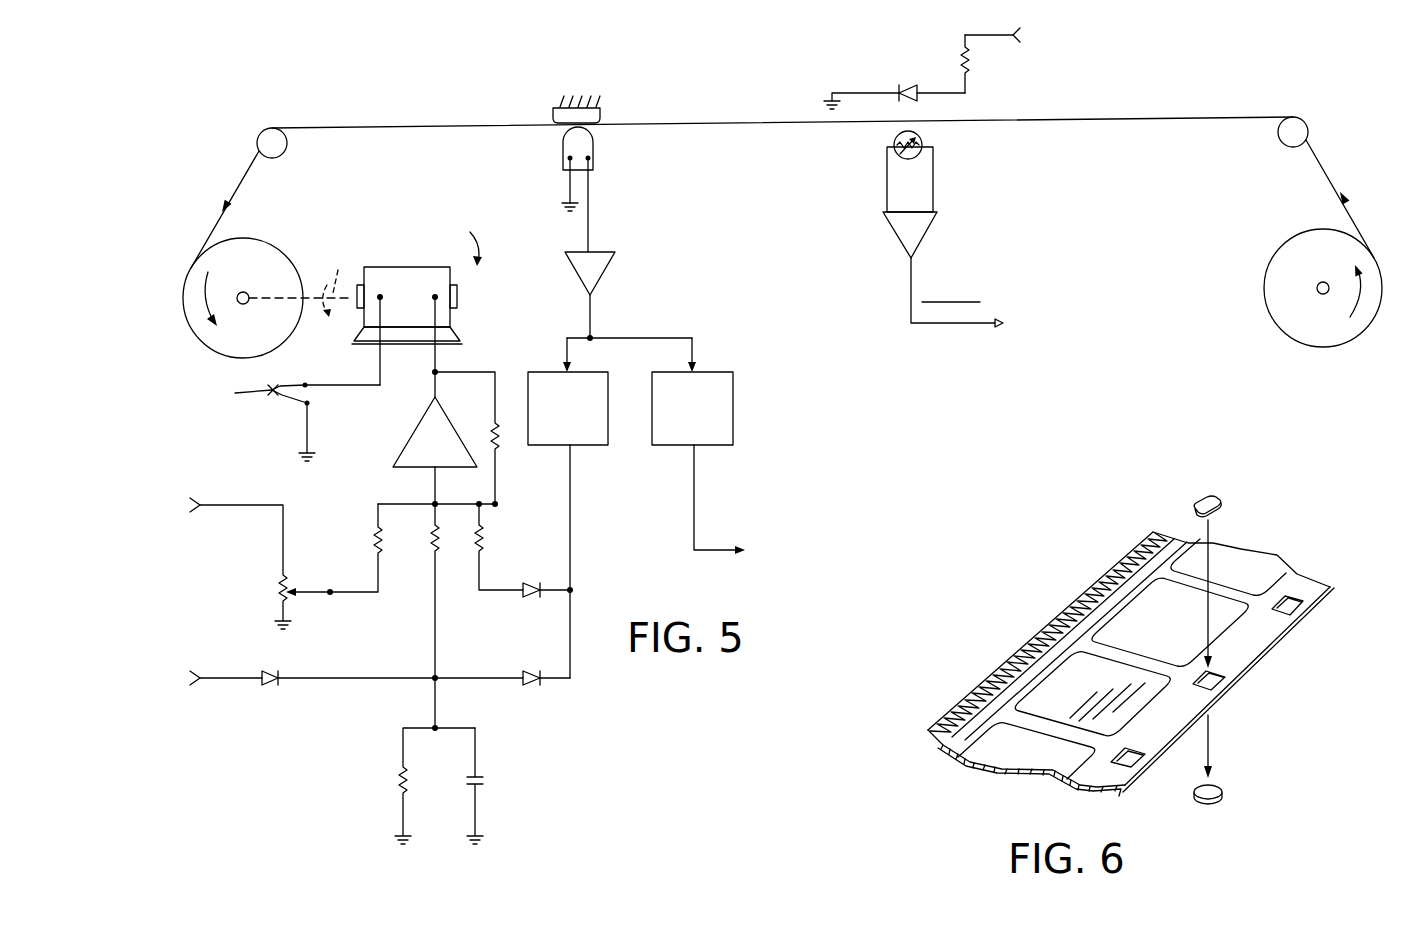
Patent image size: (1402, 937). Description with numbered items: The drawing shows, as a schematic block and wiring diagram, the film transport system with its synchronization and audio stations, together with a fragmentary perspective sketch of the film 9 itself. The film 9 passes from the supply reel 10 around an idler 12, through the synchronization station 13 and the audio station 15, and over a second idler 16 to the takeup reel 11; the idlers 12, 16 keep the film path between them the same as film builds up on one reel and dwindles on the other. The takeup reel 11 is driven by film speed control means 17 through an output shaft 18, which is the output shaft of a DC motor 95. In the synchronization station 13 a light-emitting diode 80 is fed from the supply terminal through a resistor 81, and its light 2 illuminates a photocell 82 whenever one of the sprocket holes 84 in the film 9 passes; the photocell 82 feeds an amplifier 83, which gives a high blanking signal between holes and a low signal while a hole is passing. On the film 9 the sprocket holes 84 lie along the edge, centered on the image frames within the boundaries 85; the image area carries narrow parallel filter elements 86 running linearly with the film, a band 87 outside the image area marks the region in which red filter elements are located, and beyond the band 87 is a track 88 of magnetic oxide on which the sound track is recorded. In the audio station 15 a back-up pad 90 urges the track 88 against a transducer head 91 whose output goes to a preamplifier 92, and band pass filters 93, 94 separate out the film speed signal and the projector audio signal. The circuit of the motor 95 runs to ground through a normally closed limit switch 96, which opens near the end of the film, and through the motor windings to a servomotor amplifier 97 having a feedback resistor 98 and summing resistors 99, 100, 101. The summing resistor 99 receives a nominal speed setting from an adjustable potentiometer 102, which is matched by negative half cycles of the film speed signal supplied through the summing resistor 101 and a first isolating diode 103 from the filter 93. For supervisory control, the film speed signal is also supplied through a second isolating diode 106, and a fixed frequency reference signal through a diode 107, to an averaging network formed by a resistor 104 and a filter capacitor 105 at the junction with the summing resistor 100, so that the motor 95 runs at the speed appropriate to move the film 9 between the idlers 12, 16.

In FIG. 5, the film 9 is at (437, 125).
In FIG. 6, the film 9 is at (1102, 562).
In FIG. 5, the second idler 16 is at (286, 148).
In FIG. 5, the takeup reel 11 is at (285, 262).
In FIG. 5, the output shaft 18 is at (301, 282).
In FIG. 5, the DC motor 95 is at (390, 272).
In FIG. 5, the film speed control means 17 is at (467, 239).
In FIG. 5, the back-up pad 90 is at (602, 116).
In FIG. 5, the transducer head 91 is at (597, 147).
In FIG. 5, the audio station 15 is at (612, 173).
In FIG. 5, the preamplifier 92 is at (603, 254).
In FIG. 5, the light-emitting diode 80 is at (906, 86).
In FIG. 6, the light-emitting diode 80 is at (1222, 506).
In FIG. 5, the light beam 2 is at (942, 66).
In FIG. 5, the resistor 81 is at (970, 68).
In FIG. 5, the photocell 82 is at (922, 140).
In FIG. 6, the photocell 82 is at (1223, 797).
In FIG. 5, the synchronization station 13 is at (876, 173).
In FIG. 5, the amplifier 83 is at (929, 232).
In FIG. 5, the idler 12 is at (1287, 146).
In FIG. 5, the supply reel 10 is at (1270, 292).
In FIG. 5, the limit switch 96 is at (271, 403).
In FIG. 5, the servomotor amplifier 97 is at (416, 431).
In FIG. 5, the feedback resistor 98 is at (497, 442).
In FIG. 5, the band pass filter 93 is at (593, 446).
In FIG. 5, the band pass filter 94 is at (733, 448).
In FIG. 5, the summing resistor 99 is at (372, 542).
In FIG. 5, the summing resistor 100 is at (434, 531).
In FIG. 5, the summing resistor 101 is at (485, 545).
In FIG. 5, the adjustable potentiometer 102 is at (296, 580).
In FIG. 5, the first isolating diode 103 is at (527, 606).
In FIG. 5, the resistor 104 is at (399, 783).
In FIG. 5, the filter capacitor 105 is at (483, 784).
In FIG. 5, the second isolating diode 106 is at (530, 688).
In FIG. 5, the diode 107 is at (268, 690).
In FIG. 6, the image frame boundaries 85 is at (1099, 625).
In FIG. 6, the band 87 is at (1043, 656).
In FIG. 6, the track of magnetic oxide material 88 is at (990, 682).
In FIG. 6, the filter elements 86 is at (1086, 727).
In FIG. 6, the sprocket holes 84 is at (1299, 608).